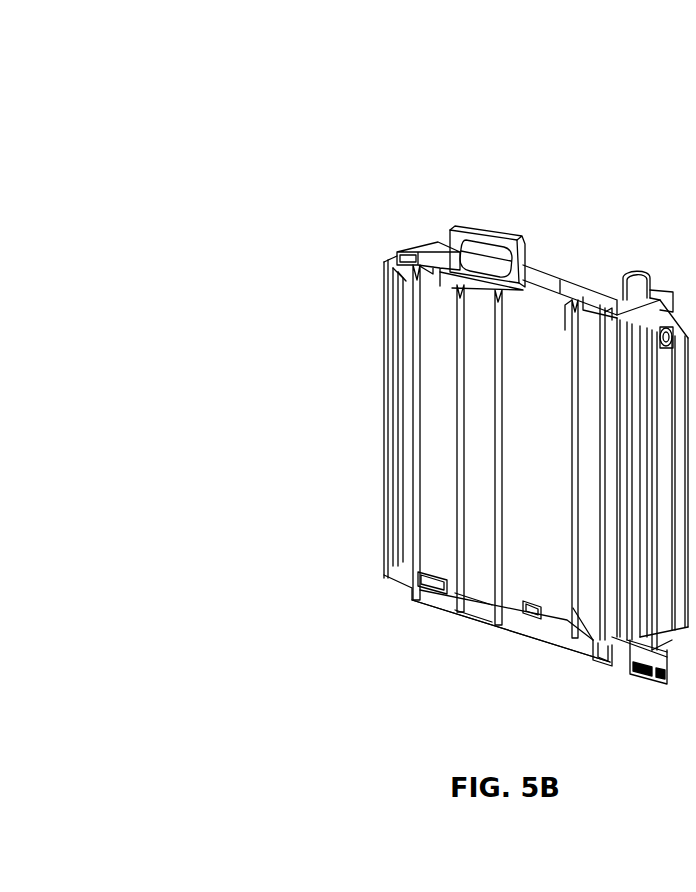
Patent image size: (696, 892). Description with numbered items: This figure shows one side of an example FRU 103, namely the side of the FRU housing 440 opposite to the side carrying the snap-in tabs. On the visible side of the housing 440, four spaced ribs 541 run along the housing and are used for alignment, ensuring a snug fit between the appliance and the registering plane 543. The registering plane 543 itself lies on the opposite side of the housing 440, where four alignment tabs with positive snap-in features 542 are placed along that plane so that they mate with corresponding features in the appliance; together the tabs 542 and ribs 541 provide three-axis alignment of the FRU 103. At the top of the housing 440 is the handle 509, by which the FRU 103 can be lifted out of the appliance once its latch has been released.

The FRU 103 is at (537, 176).
The FRU housing 440 is at (423, 248).
The handle 509 is at (0, 106).
The spaced ribs 541 is at (573, 322).
The alignment tabs with positive snap-in features 542 is at (12, 397).
The registering plane 543 is at (305, 648).